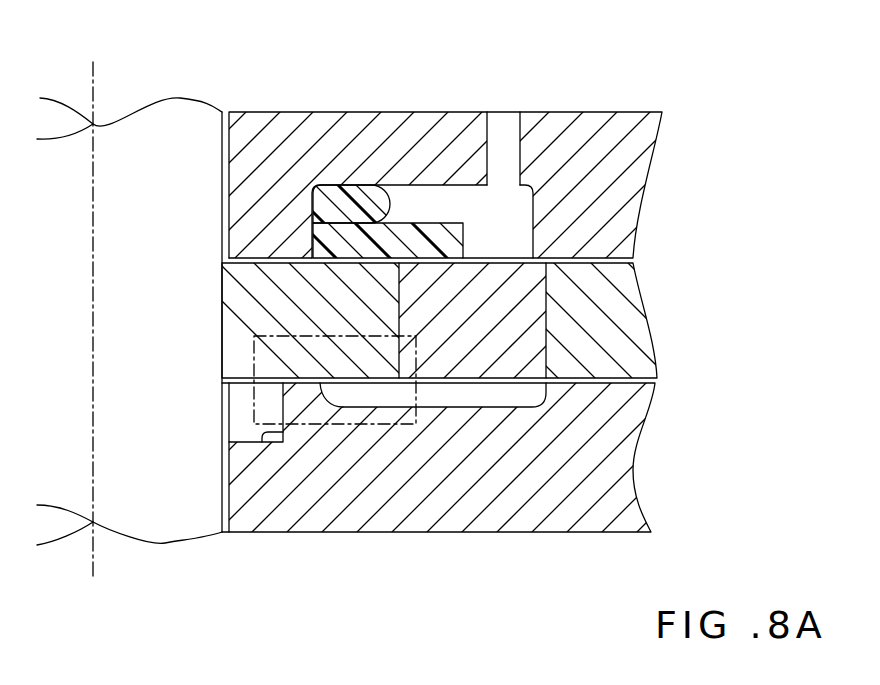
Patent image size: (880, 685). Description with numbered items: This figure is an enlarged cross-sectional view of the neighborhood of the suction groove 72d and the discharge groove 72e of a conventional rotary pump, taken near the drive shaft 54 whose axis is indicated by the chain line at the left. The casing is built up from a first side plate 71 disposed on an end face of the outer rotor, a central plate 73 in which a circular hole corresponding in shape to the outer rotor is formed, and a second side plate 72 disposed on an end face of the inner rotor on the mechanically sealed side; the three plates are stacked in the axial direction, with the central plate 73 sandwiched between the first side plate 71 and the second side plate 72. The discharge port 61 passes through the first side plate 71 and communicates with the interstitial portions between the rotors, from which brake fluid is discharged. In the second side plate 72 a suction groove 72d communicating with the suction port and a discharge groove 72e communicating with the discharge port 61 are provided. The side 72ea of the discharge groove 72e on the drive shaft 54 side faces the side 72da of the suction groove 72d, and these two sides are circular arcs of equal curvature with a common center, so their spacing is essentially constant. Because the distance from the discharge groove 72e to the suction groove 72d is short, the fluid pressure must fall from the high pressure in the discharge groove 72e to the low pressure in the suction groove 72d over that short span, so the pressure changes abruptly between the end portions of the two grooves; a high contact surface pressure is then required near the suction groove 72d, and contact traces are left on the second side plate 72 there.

The drive shaft 54 is at (137, 518).
The discharge port 61 is at (496, 143).
The first side plate 71 is at (606, 112).
The second side plate 72 is at (592, 522).
The suction groove 72d is at (242, 442).
The side of the suction groove 72da is at (260, 438).
The discharge groove 72e is at (473, 405).
The side of the discharge groove 72ea is at (320, 385).
The central plate 73 is at (612, 305).